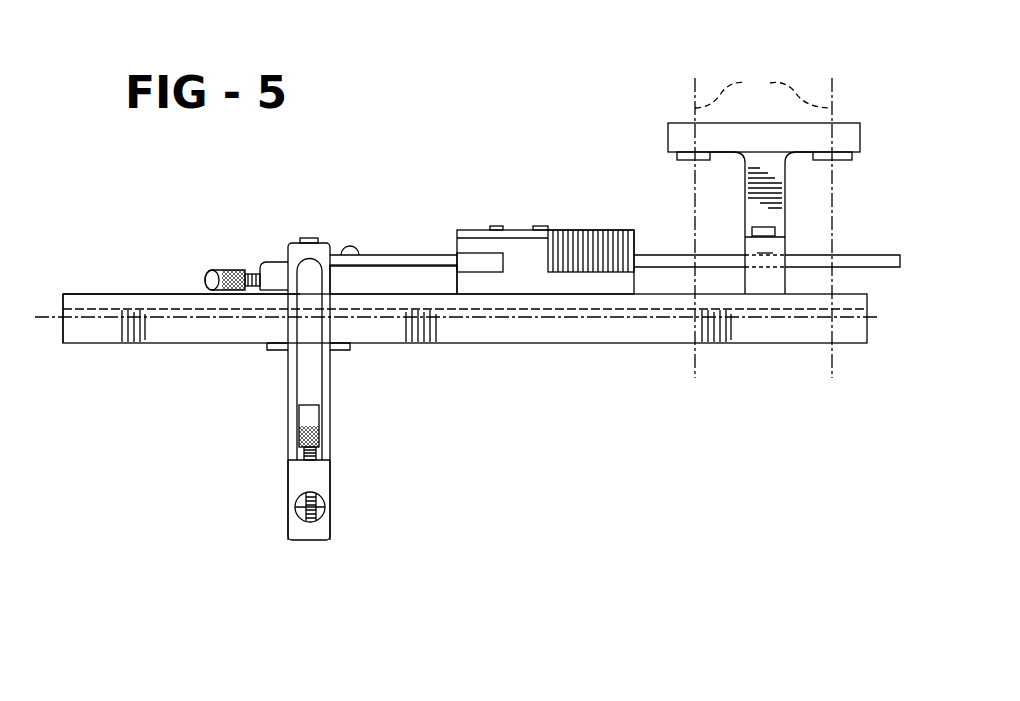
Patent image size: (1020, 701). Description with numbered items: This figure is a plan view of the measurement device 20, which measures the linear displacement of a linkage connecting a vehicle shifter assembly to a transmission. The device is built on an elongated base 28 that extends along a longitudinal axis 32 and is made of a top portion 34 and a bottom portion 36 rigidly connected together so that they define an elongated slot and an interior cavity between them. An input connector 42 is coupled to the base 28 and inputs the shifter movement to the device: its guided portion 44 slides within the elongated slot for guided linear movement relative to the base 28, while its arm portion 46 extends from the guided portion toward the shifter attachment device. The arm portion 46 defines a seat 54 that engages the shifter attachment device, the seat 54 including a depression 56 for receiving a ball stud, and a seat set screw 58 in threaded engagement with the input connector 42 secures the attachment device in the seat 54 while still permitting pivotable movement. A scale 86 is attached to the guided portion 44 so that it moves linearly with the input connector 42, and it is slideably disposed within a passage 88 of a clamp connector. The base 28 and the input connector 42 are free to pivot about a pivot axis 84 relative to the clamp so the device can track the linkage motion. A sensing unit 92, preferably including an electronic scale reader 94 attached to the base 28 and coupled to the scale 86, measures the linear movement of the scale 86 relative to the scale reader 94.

The measurement device 20 is at (620, 83).
The base 28 is at (593, 328).
The longitudinal axis 32 is at (44, 316).
The top portion 34 is at (64, 297).
The bottom portion 36 is at (75, 330).
The input connector 42 is at (280, 250).
The guided portion 44 is at (346, 275).
The arm portion 46 is at (313, 374).
The seat 54 is at (318, 478).
The depression 56 is at (310, 510).
The seat set screw 58 is at (223, 277).
The pivot axis 84 is at (764, 225).
The scale 86 is at (415, 254).
The passage 88 is at (768, 251).
The sensing unit 92 is at (515, 214).
The electronic scale reader 94 is at (597, 229).